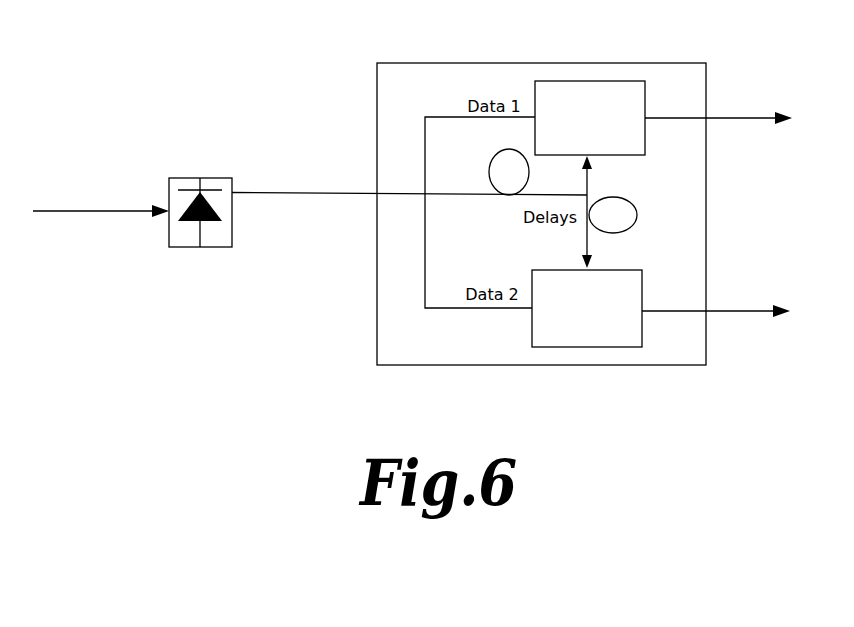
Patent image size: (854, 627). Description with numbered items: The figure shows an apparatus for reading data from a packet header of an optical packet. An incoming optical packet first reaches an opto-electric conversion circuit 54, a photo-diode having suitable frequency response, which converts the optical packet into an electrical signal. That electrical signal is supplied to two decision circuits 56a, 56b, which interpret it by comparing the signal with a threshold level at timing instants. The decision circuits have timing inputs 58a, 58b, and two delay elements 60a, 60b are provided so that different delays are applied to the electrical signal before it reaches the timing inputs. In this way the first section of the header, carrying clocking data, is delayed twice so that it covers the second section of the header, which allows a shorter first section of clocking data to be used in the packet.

The opto-electric conversion circuit 54 is at (187, 178).
The decision circuit 56a is at (580, 81).
The decision circuit 56b is at (573, 347).
The timing input 58a is at (589, 175).
The timing input 58b is at (589, 250).
The delay element 60a is at (496, 190).
The delay element 60b is at (637, 218).